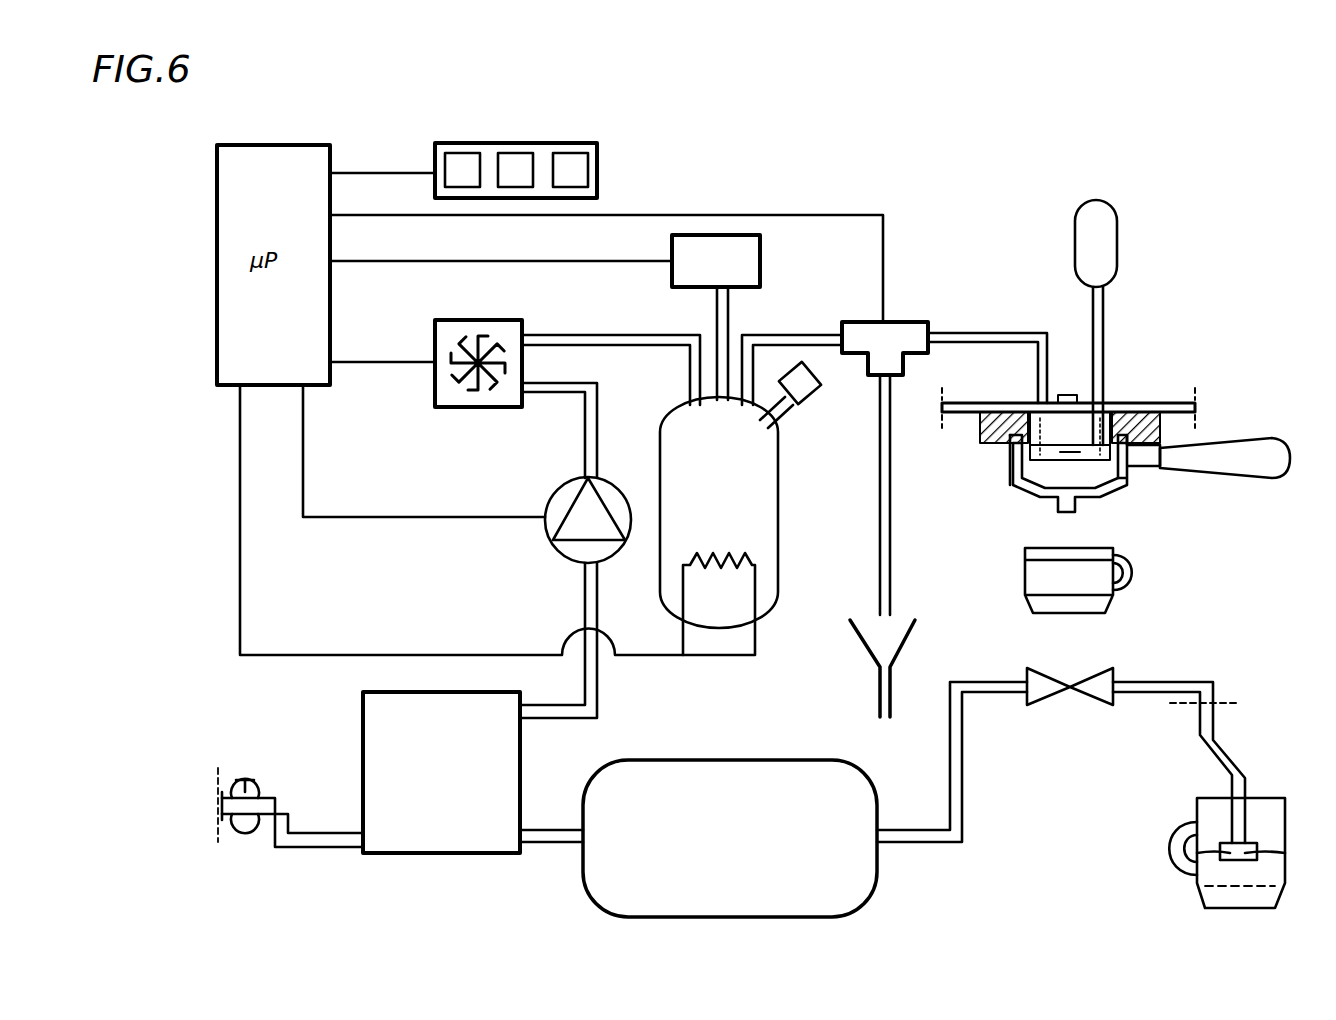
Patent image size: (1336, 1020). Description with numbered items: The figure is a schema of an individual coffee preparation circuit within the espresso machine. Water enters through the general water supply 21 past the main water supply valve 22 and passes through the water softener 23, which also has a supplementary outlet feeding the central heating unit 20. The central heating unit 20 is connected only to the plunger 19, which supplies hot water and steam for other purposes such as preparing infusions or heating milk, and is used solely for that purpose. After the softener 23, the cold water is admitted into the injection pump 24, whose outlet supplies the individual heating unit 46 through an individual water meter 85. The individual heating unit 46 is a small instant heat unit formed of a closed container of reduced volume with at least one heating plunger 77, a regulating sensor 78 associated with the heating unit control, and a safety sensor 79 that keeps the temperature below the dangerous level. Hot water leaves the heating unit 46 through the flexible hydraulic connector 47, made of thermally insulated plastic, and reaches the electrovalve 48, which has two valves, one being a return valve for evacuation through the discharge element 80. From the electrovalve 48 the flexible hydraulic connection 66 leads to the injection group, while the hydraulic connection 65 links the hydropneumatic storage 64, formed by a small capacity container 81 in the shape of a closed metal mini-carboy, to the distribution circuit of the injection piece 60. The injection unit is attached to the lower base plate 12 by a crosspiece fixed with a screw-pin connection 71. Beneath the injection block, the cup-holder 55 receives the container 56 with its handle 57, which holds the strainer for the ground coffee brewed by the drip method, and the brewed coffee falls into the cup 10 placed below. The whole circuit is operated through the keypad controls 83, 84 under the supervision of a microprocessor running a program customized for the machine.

The keypad control 83 is at (516, 142).
The keypad control 84 is at (490, 136).
The regulating sensor 78 is at (707, 238).
The individual water meter 85 is at (505, 410).
The injection pump 24 is at (572, 556).
The individual heating unit 46 is at (788, 490).
The heating plunger 77 is at (732, 590).
The safety sensor 79 is at (800, 402).
The electrovalve 48 is at (905, 335).
The flexible hydraulic connector 47 is at (812, 285).
The discharge element 80 is at (893, 550).
The hydraulic connection 66 is at (957, 340).
The lower base plate 12 is at (1150, 405).
The small capacity container 81 is at (1110, 262).
The hydropneumatic storage 64 is at (1090, 218).
The hydraulic connection 65 is at (1102, 323).
The screw-pin connection 71 is at (1069, 385).
The container 56 is at (1000, 452).
The cup-holder 55 is at (1160, 430).
The injection piece 60 is at (1073, 435).
The handle 57 is at (1228, 462).
The cup 10 is at (1132, 598).
The plunger 19 is at (1258, 778).
The central heating unit 20 is at (838, 885).
The water softener 23 is at (425, 845).
The general water supply 21 is at (333, 852).
The main water supply valve 22 is at (238, 798).